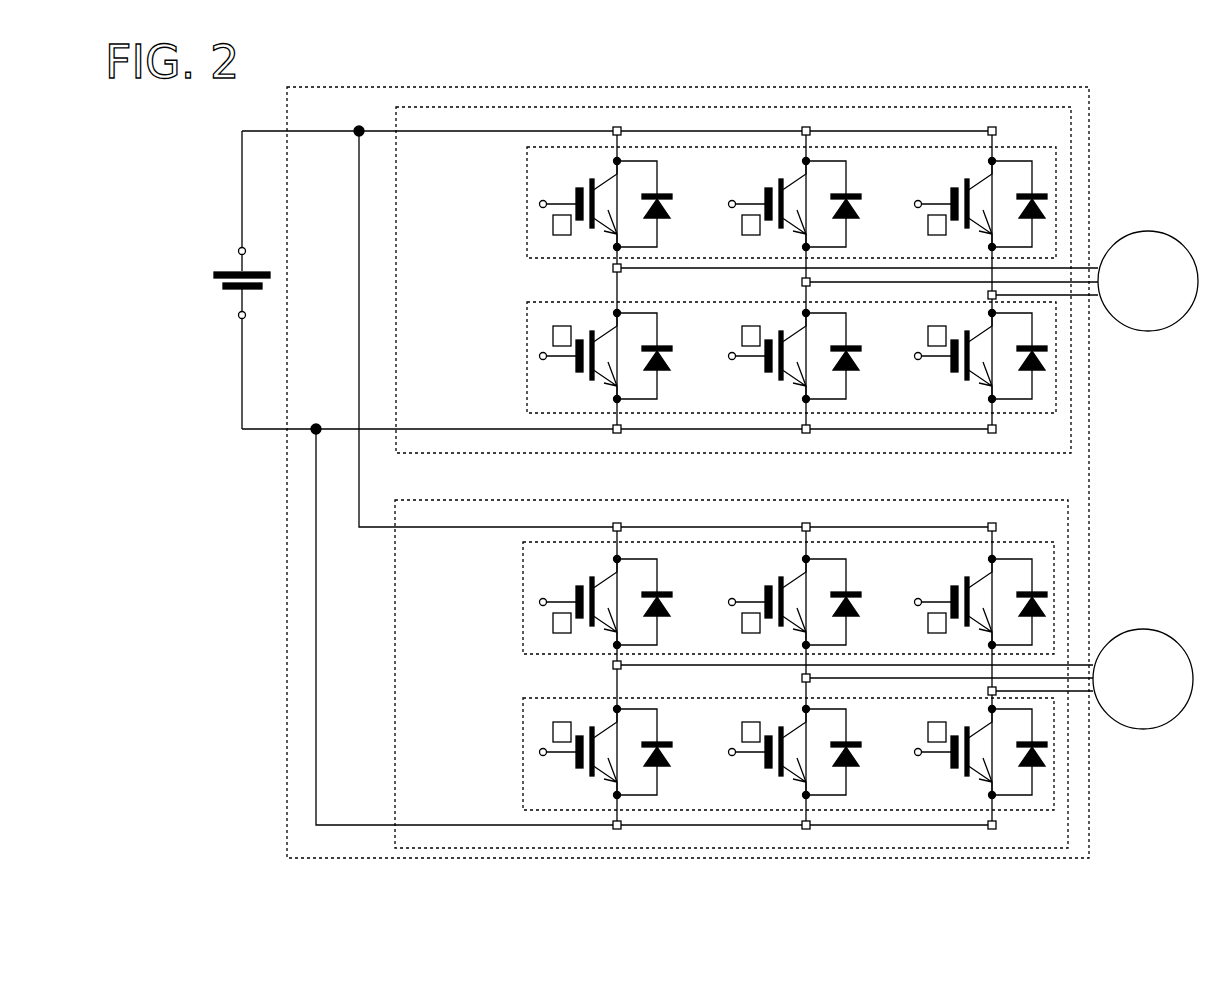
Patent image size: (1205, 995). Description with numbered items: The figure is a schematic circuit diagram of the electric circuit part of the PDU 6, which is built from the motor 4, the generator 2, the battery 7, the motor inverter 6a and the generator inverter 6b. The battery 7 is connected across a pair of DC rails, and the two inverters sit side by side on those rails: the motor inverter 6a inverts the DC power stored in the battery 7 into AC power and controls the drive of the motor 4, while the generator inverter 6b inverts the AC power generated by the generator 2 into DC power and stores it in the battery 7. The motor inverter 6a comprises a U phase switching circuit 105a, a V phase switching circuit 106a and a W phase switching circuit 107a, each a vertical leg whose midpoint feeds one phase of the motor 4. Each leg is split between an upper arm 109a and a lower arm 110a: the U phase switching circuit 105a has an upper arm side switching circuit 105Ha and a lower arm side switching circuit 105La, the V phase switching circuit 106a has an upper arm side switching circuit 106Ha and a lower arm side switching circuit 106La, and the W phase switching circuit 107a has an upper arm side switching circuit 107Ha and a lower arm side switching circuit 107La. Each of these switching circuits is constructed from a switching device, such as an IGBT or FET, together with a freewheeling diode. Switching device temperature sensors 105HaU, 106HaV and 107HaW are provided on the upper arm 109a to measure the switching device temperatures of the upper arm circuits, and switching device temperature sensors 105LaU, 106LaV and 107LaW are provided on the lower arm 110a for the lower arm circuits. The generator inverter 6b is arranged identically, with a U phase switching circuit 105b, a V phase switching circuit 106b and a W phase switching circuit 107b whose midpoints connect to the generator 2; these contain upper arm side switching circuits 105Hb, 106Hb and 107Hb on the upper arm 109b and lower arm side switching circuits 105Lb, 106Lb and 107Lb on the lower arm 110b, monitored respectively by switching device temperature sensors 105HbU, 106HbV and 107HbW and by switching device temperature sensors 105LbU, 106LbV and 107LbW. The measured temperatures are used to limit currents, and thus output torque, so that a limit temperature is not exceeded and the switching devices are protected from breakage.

The generator 2 is at (1133, 648).
The motor 4 is at (1137, 250).
The PDU 6 is at (1090, 106).
The motor inverter 6a is at (427, 117).
The generator inverter 6b is at (422, 512).
The battery 7 is at (230, 268).
The U phase switching circuit 105a is at (585, 162).
The V phase switching circuit 106a is at (775, 162).
The W phase switching circuit 107a is at (961, 162).
The U phase switching circuit 105b is at (583, 557).
The V phase switching circuit 106b is at (775, 557).
The W phase switching circuit 107b is at (961, 557).
The upper arm side switching circuit 105Ha is at (575, 192).
The upper arm side switching circuit 106Ha is at (764, 192).
The upper arm side switching circuit 107Ha is at (950, 192).
The lower arm side switching circuit 105La is at (575, 370).
The lower arm side switching circuit 106La is at (764, 370).
The lower arm side switching circuit 107La is at (950, 370).
The switching device temperature sensor 105HaU is at (553, 226).
The switching device temperature sensor 106HaV is at (742, 226).
The switching device temperature sensor 107HaW is at (928, 226).
The switching device temperature sensor 105LaU is at (553, 336).
The switching device temperature sensor 106LaV is at (742, 336).
The switching device temperature sensor 107LaW is at (928, 336).
The upper arm side switching circuit 105Hb is at (575, 590).
The upper arm side switching circuit 106Hb is at (764, 590).
The upper arm side switching circuit 107Hb is at (950, 590).
The lower arm side switching circuit 105Lb is at (575, 766).
The lower arm side switching circuit 106Lb is at (764, 766).
The lower arm side switching circuit 107Lb is at (950, 766).
The switching device temperature sensor 105HbU is at (553, 622).
The switching device temperature sensor 106HbV is at (742, 622).
The switching device temperature sensor 107HbW is at (928, 622).
The switching device temperature sensor 105LbU is at (553, 732).
The switching device temperature sensor 106LbV is at (742, 732).
The switching device temperature sensor 107LbW is at (928, 732).
The upper arm 109a is at (1047, 161).
The lower arm 110a is at (1047, 412).
The upper arm 109b is at (1045, 555).
The lower arm 110b is at (1045, 793).